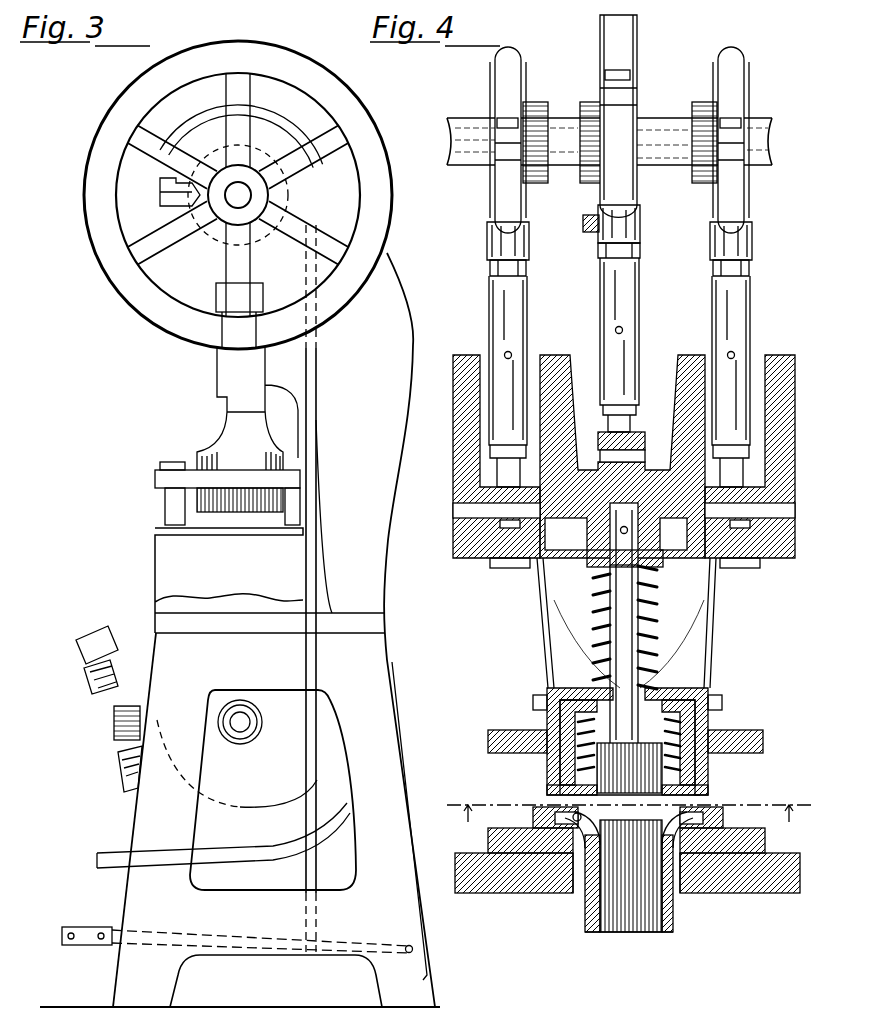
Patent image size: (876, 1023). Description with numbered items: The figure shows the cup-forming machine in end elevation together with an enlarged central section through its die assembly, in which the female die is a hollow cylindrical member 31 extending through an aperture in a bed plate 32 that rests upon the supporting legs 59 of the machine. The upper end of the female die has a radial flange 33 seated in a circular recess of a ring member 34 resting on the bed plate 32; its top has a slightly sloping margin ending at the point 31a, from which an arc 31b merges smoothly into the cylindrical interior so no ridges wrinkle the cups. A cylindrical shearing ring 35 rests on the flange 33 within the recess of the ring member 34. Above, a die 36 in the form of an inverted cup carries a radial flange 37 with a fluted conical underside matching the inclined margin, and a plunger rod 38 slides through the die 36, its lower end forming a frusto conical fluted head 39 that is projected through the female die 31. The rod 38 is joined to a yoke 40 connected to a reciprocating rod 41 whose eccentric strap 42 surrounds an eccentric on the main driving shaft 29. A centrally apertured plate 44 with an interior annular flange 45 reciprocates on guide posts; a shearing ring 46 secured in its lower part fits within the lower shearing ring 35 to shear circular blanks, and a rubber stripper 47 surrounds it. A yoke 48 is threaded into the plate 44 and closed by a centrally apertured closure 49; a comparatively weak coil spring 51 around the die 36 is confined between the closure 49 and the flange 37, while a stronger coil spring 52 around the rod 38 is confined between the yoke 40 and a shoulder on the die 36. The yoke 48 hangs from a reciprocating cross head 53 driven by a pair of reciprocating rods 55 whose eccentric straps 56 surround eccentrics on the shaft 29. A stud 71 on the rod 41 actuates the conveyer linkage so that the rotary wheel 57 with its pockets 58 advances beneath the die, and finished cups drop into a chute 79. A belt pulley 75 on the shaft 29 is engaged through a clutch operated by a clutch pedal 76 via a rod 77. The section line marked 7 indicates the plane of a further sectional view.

In FIG. 3, the main driving shaft 29 is at (238, 200).
In FIG. 4, the main driving shaft 29 is at (648, 128).
In FIG. 3, the eccentric strap 42 is at (277, 118).
In FIG. 4, the eccentric strap 42 is at (620, 47).
In FIG. 3, the belt pulley 75 is at (377, 212).
In FIG. 3, the shearing ring 46 is at (253, 440).
In FIG. 4, the shearing ring 46 is at (693, 783).
In FIG. 3, the pockets 58 is at (105, 646).
In FIG. 3, the rotary wheel 57 is at (114, 714).
In FIG. 3, the rod 77 is at (307, 670).
In FIG. 3, the supporting legs 59 is at (261, 803).
In FIG. 3, the chute 79 is at (122, 870).
In FIG. 3, the clutch pedal 76 is at (92, 945).
In FIG. 4, the eccentric straps 56 is at (732, 83).
In FIG. 4, the stud 71 is at (585, 230).
In FIG. 4, the reciprocating rod 41 is at (632, 293).
In FIG. 4, the yoke 40 is at (655, 470).
In FIG. 4, the reciprocating rods 55 is at (740, 322).
In FIG. 4, the reciprocating cross head 53 is at (475, 540).
In FIG. 4, the stronger coil spring 52 is at (657, 597).
In FIG. 4, the plunger rod 38 is at (597, 627).
In FIG. 4, the centrally apertured closure 49 is at (672, 605).
In FIG. 4, the yoke 48 is at (715, 628).
In FIG. 4, the annular flange 45 is at (552, 728).
In FIG. 4, the comparatively weak coil spring 51 is at (683, 692).
In FIG. 4, the die 36 is at (587, 757).
In FIG. 4, the centrally apertured plate 44 is at (733, 738).
In FIG. 4, the frusto conical fluted head 39 is at (597, 768).
In FIG. 4, the cylindrical shearing ring 35 is at (723, 812).
In FIG. 4, the radial flange 37 is at (570, 790).
In FIG. 4, the ring member 34 is at (733, 833).
In FIG. 4, the rubber stripper 47 is at (550, 798).
In FIG. 4, the section line 7- 7 is at (630, 823).
In FIG. 4, the bed plate 32 is at (522, 877).
In FIG. 4, the point 31a is at (565, 873).
In FIG. 4, the hollow cylindrical member 31 is at (673, 923).
In FIG. 4, the arc 31b is at (668, 897).
In FIG. 4, the radial flange 33 is at (714, 838).